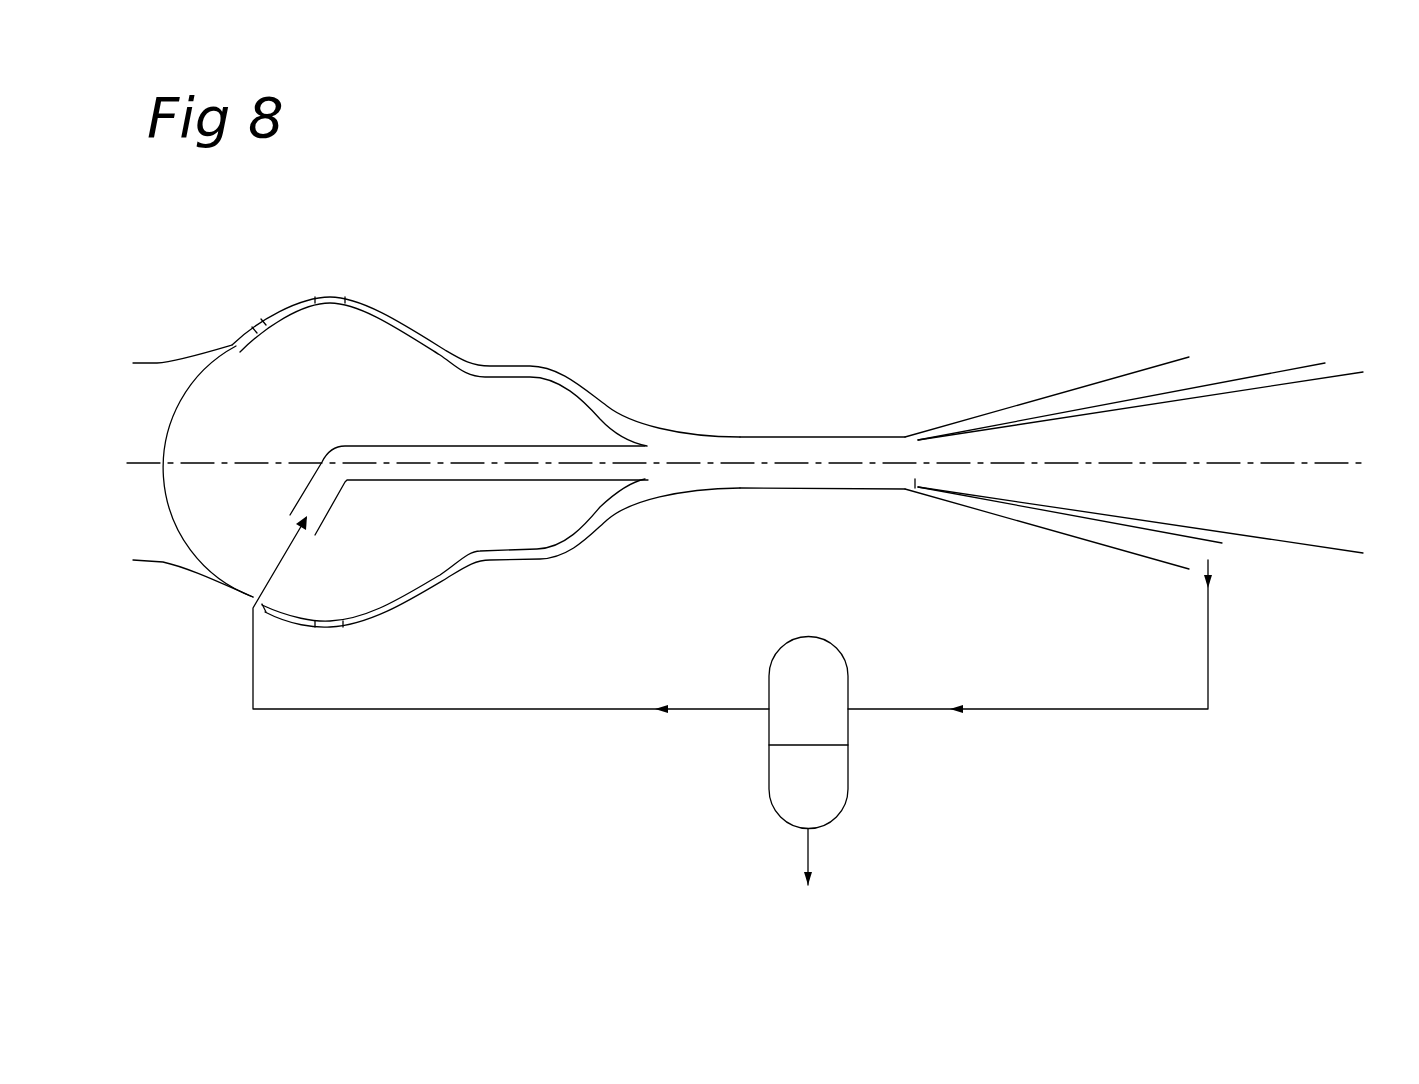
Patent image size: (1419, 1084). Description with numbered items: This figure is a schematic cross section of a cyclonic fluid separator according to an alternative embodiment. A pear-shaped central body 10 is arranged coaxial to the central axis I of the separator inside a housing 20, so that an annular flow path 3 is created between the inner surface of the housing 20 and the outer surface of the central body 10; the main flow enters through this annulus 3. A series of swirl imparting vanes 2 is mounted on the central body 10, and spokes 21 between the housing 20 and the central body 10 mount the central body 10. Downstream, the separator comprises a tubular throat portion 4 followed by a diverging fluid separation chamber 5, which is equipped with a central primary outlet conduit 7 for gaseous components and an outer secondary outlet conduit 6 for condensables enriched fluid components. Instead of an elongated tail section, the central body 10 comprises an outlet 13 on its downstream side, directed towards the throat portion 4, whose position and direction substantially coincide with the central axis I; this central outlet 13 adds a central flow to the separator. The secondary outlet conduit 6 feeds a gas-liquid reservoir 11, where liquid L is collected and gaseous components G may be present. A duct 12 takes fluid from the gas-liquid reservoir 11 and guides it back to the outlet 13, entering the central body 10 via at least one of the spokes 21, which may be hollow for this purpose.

The swirl imparting vanes 2 is at (330, 300).
The annular flow path 3 is at (434, 338).
The tubular throat portion 4 is at (712, 447).
The diverging fluid separation chamber 5 is at (913, 489).
The secondary outlet conduit 6 is at (1108, 394).
The primary outlet conduit 7 is at (1128, 490).
The central body 10 is at (236, 355).
The gas-liquid reservoir 11 is at (788, 662).
The duct 12 is at (678, 710).
The outlet 13 is at (648, 463).
The housing 20 is at (533, 366).
The spokes 21 is at (266, 318).
The central axis I is at (1368, 463).